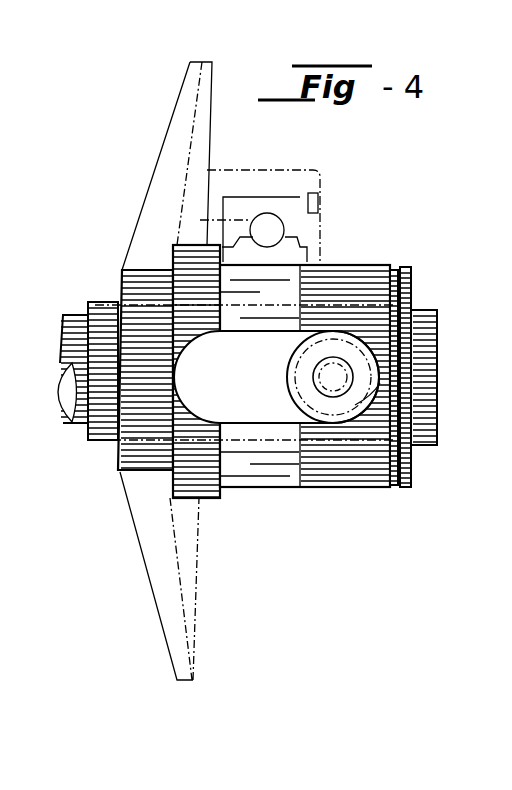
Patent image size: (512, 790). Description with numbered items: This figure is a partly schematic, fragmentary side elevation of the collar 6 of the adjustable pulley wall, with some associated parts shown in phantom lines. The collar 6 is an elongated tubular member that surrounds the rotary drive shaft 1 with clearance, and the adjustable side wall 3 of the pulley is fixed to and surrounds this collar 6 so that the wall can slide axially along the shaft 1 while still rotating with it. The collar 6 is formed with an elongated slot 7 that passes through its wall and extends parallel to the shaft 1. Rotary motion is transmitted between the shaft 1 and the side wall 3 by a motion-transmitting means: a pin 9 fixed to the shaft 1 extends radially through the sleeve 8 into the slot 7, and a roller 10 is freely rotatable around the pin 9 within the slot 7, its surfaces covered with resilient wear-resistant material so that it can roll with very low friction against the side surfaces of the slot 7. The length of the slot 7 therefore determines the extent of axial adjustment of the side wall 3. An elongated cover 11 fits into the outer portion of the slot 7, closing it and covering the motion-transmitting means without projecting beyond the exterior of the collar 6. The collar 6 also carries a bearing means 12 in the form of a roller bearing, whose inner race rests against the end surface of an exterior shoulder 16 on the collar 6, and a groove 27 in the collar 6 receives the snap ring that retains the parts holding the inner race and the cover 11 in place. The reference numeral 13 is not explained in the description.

The drive shaft 1 is at (72, 424).
The adjustable side wall 3 is at (164, 156).
The collar 6 is at (343, 470).
The slot 7 is at (283, 412).
The sleeve 8 is at (97, 438).
The pin 9 is at (340, 383).
The roller 10 is at (353, 403).
The cover 11 is at (287, 420).
The bearing means 12 is at (265, 213).
The bracket 13 is at (289, 172).
The shoulder 16 is at (206, 498).
The groove 27 is at (395, 372).